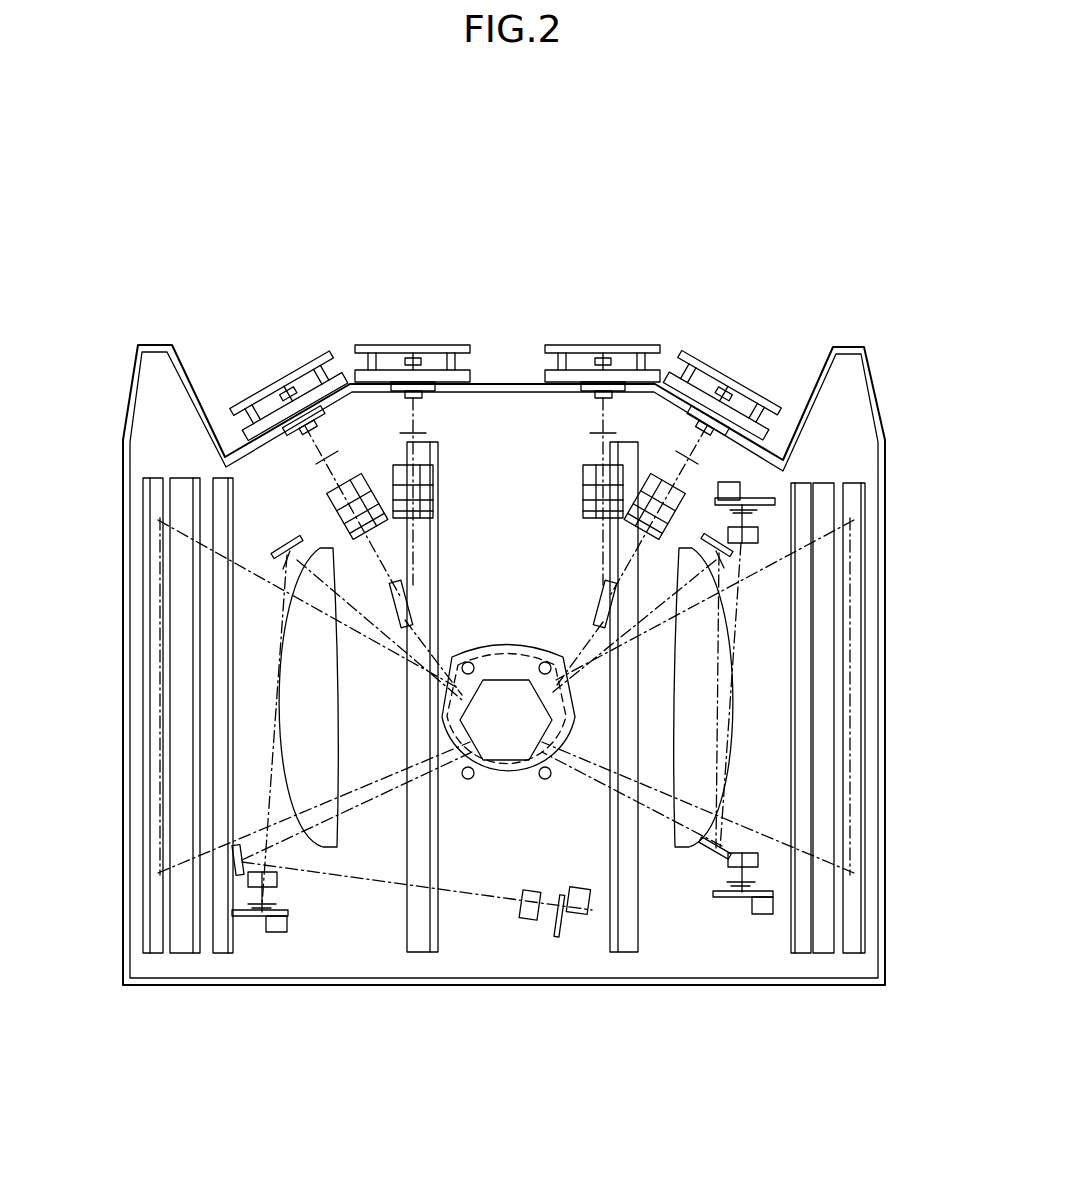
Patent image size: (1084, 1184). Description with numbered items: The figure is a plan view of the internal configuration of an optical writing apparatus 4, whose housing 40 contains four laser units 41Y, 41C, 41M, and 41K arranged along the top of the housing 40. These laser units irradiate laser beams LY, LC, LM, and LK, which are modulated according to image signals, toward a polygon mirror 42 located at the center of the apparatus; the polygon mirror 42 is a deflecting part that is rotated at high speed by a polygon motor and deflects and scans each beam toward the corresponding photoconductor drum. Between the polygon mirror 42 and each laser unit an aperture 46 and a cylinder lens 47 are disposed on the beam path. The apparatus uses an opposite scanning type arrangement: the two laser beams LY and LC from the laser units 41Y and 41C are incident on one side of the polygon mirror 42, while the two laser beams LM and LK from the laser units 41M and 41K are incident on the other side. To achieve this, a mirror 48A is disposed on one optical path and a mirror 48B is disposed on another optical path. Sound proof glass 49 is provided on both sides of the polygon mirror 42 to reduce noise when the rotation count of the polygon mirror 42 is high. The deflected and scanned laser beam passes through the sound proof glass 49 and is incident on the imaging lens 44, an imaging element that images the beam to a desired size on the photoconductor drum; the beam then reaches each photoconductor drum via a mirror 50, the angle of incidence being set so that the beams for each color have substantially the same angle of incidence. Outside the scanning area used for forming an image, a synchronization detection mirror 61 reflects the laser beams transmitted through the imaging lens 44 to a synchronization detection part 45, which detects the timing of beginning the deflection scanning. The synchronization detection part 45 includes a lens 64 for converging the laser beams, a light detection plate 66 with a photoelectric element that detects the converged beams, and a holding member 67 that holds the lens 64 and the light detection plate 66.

The optical writing apparatus 4 is at (125, 291).
The housing 40 is at (125, 516).
The laser unit 41Y is at (284, 365).
The laser unit 41C is at (413, 336).
The laser unit 41M is at (603, 336).
The laser unit 41K is at (730, 365).
The polygon mirror 42 is at (503, 675).
The imaging lens 44 is at (327, 697).
The synchronization detection part 45 is at (542, 1000).
The aperture 46 is at (596, 436).
The cylinder lens 47 is at (581, 483).
The mirror 48A is at (408, 598).
The mirror 48B is at (598, 606).
The sound proof glass 49 is at (430, 915).
The mirror 50 is at (155, 680).
The synchronization detection mirror 61 is at (240, 878).
The lens 64 is at (528, 922).
The light detection plate 66 is at (578, 914).
The holding member 67 is at (563, 920).
The laser beam LY is at (320, 432).
The laser beam LC is at (416, 406).
The laser beam LM is at (600, 406).
The laser beam LK is at (696, 440).